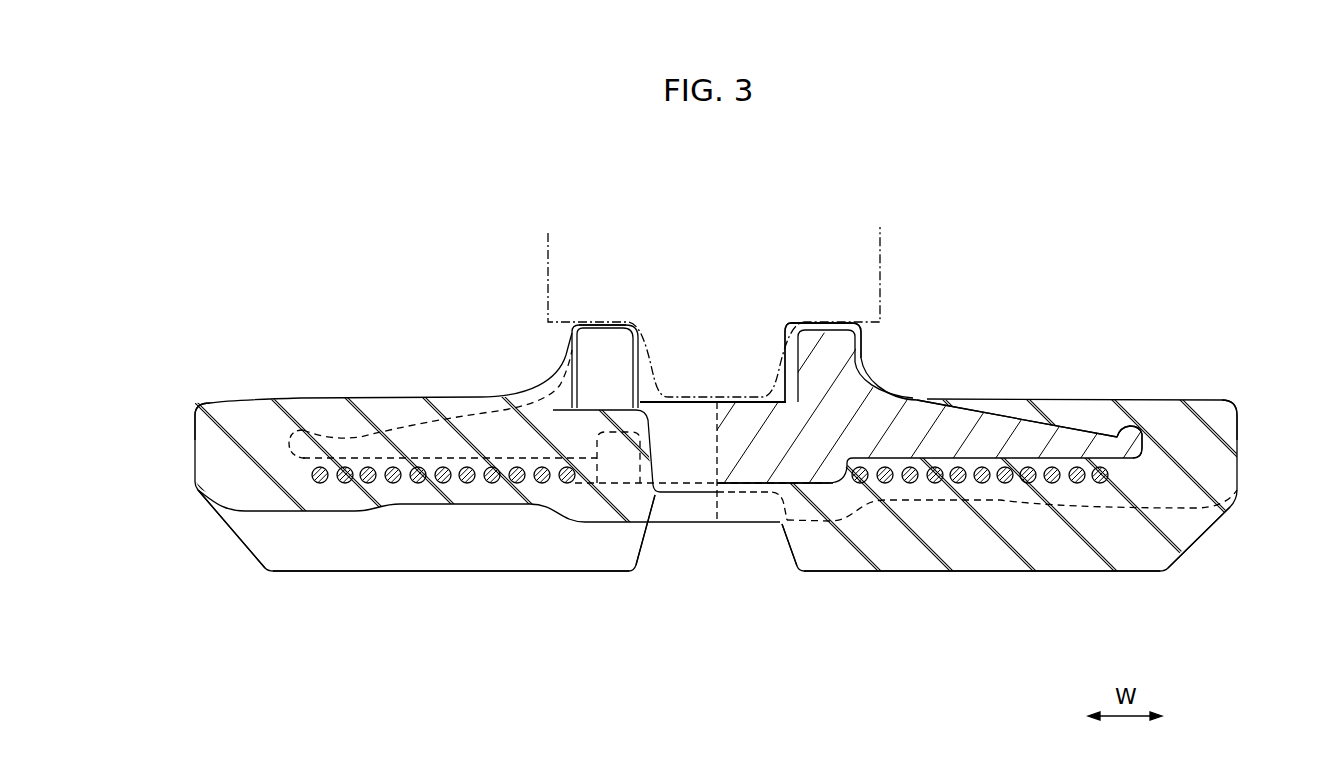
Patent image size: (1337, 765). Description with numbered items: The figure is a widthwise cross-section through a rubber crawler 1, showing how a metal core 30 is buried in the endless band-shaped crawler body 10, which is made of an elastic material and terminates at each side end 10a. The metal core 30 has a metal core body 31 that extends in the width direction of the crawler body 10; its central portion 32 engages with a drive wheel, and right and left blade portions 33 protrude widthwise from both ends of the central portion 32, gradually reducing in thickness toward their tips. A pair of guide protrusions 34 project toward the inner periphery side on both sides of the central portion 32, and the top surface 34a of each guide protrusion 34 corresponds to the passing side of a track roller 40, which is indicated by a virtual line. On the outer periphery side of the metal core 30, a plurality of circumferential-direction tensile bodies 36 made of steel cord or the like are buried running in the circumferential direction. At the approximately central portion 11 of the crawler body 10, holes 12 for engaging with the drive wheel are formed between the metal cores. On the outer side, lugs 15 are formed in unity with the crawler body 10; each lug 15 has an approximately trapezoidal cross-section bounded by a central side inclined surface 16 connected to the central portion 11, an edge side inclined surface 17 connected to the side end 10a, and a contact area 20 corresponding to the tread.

The rubber crawler 1 is at (1246, 296).
The crawler body 10 is at (1156, 398).
The side end of the crawler body 10a is at (194, 430).
The central portion 11 is at (758, 514).
The hole 12 is at (684, 470).
The lug 15 is at (312, 560).
The central side inclined surface 16 is at (646, 560).
The edge side inclined surface 17 is at (233, 537).
The contact area 20 is at (483, 575).
The metal core 30 is at (917, 398).
The metal core body 31 is at (967, 420).
The central portion of the metal core body 32 is at (743, 478).
The blade portion 33 is at (303, 428).
The guide protrusion 34 is at (590, 358).
The top surface of the guide protrusion 34a is at (570, 337).
The circumferential-direction tensile body 36 is at (390, 482).
The track roller 40 is at (548, 241).